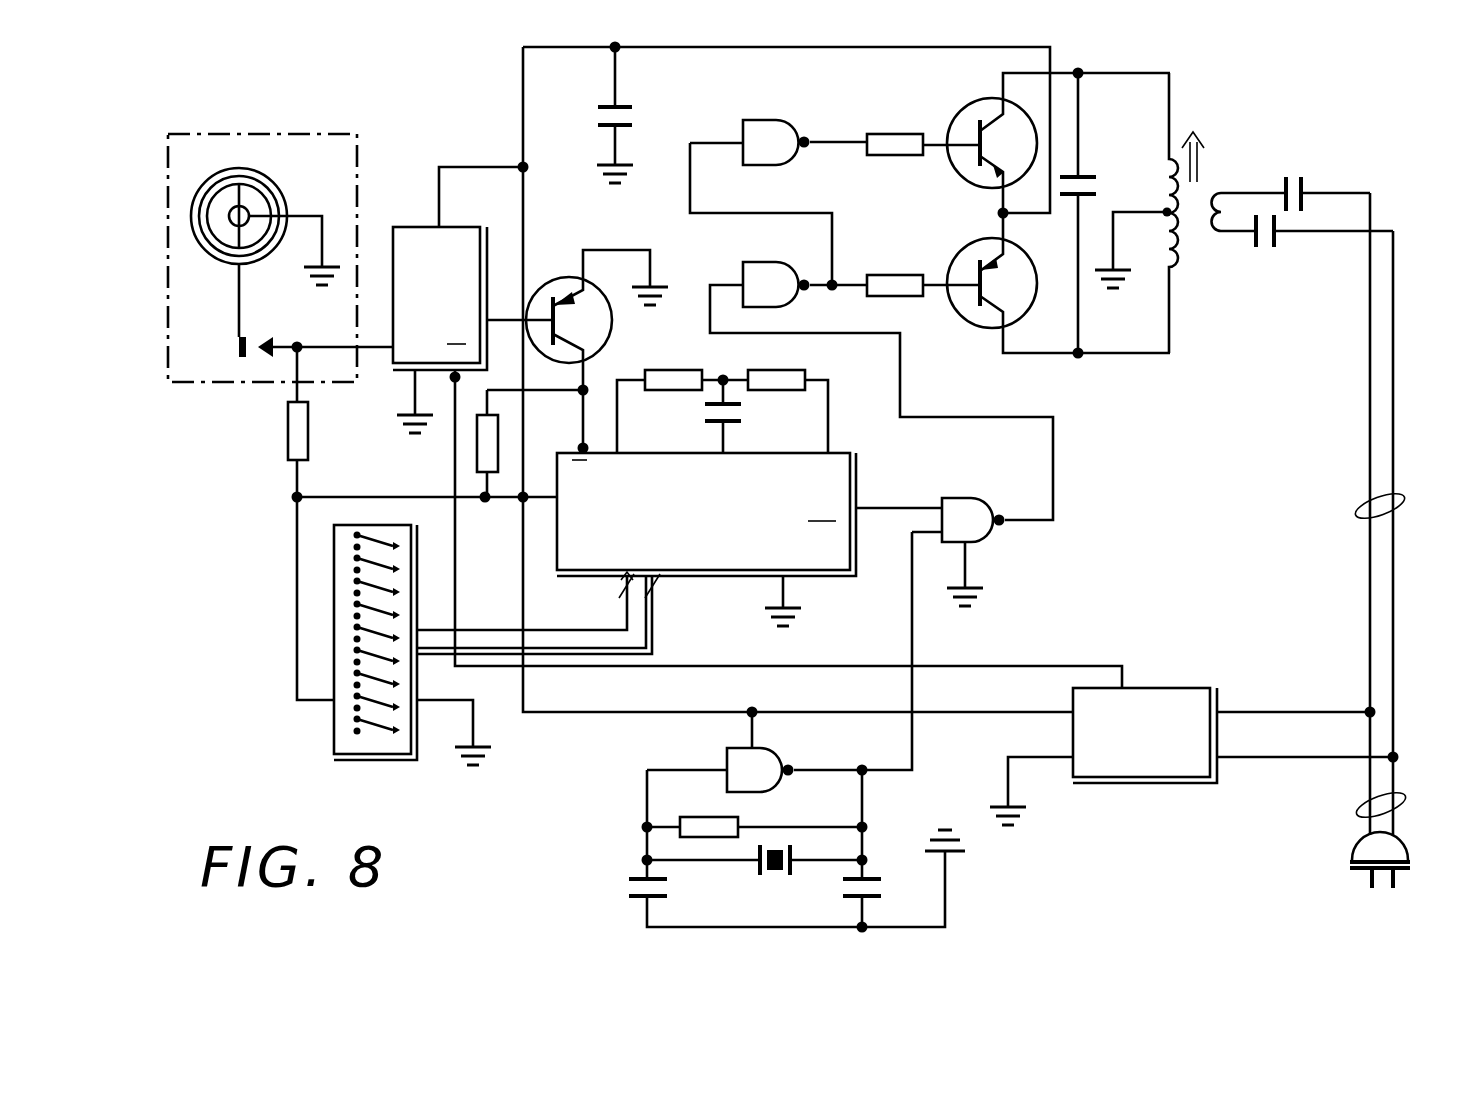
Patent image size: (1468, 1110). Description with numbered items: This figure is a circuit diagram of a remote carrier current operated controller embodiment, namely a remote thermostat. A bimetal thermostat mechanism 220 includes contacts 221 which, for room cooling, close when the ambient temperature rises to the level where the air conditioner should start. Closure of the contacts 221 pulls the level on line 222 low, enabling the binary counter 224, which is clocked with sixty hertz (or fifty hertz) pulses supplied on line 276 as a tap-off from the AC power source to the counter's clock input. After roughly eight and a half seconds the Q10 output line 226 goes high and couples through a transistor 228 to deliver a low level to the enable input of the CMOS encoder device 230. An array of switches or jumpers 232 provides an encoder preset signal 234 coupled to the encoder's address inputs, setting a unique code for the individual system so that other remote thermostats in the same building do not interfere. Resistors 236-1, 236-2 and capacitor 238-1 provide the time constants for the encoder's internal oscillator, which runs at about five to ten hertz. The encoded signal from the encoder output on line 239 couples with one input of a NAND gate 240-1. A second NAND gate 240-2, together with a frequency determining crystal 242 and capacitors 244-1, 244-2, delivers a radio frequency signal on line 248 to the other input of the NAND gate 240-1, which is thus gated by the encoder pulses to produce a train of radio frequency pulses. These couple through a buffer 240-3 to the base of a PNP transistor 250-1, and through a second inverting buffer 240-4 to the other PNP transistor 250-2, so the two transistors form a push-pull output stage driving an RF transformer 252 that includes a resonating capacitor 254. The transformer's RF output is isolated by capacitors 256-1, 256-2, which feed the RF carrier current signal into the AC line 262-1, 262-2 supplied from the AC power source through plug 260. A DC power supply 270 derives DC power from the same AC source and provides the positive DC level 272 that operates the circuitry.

The bimetal thermostat mechanism 220 is at (218, 132).
The contacts 221 is at (259, 334).
The line 222 is at (379, 352).
The binary counter 224 is at (402, 222).
The Q10 output line 226 is at (497, 314).
The transistor 228 is at (557, 284).
The encoder integrated circuit 230 is at (856, 552).
The array of switches or jumpers 232 is at (350, 760).
The encoder preset signal 234 is at (592, 630).
The resistor 236-1 is at (668, 366).
The resistor 236-2 is at (792, 366).
The capacitor 238-1 is at (699, 410).
The line 239 is at (888, 504).
The NAND gate 240-1 is at (1006, 483).
The NAND gate 240-2 is at (722, 752).
The buffer 240-3 is at (775, 262).
The second inverting buffer 240-4 is at (796, 124).
The frequency determining crystal 242 is at (757, 876).
The capacitor 244-1 is at (888, 872).
The capacitor 244-2 is at (628, 881).
The line 248 is at (915, 766).
The PNP transistor 250-1 is at (952, 118).
The PNP transistor 250-2 is at (950, 268).
The RF transformer 252 is at (1209, 152).
The resonating capacitor 254 is at (1098, 172).
The capacitor 256-1 is at (1306, 176).
The capacitor 256-2 is at (1265, 248).
The plug 260 is at (1349, 862).
The AC line 262-1 is at (1366, 404).
The AC line 262-2 is at (1397, 392).
The DC power supply 270 is at (1186, 688).
The positive DC level 272 is at (520, 110).
The line 276 is at (452, 438).